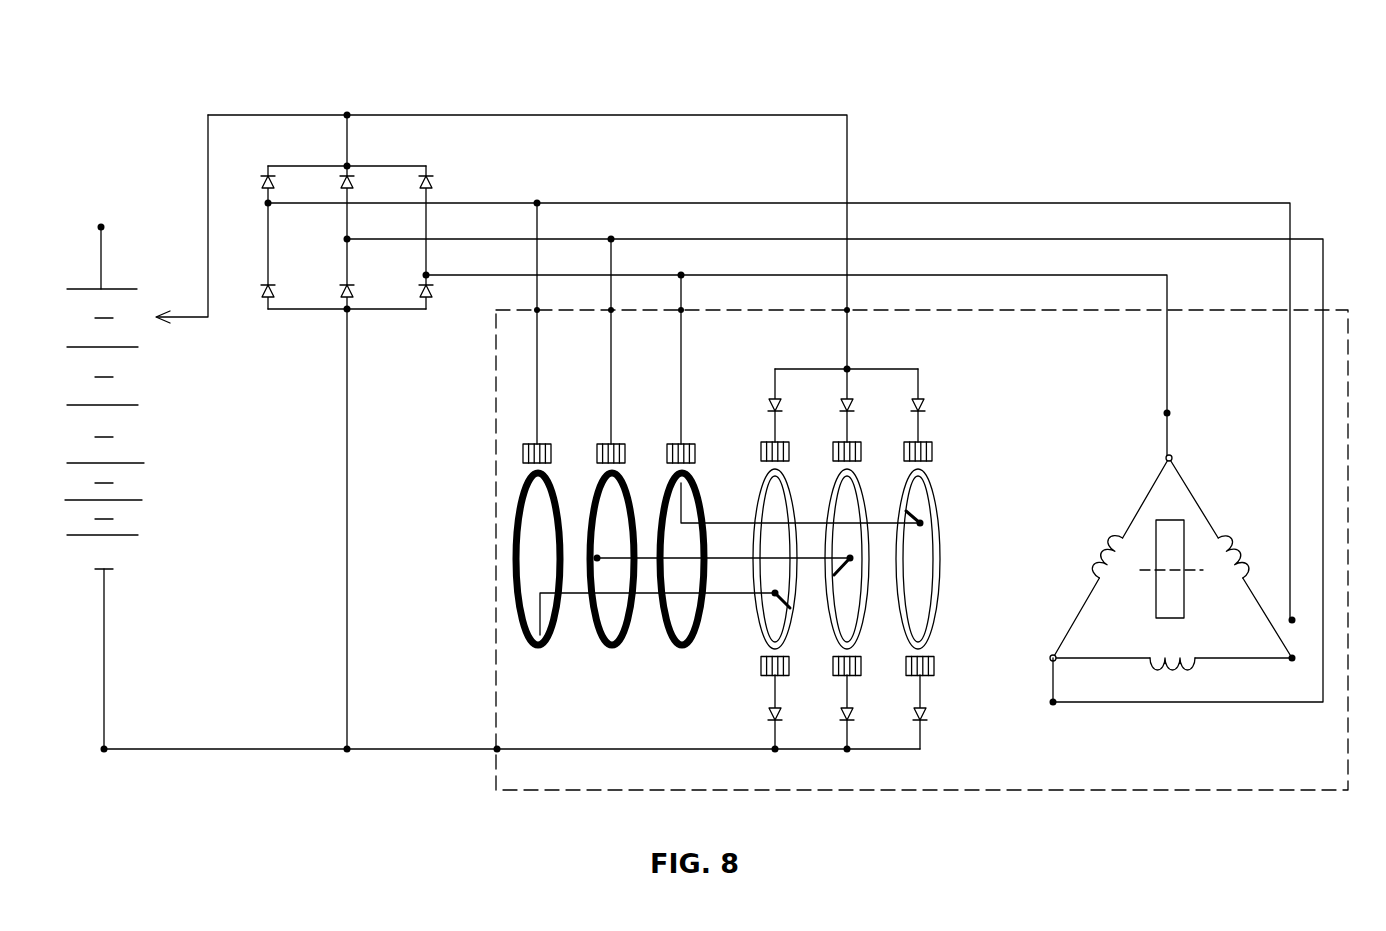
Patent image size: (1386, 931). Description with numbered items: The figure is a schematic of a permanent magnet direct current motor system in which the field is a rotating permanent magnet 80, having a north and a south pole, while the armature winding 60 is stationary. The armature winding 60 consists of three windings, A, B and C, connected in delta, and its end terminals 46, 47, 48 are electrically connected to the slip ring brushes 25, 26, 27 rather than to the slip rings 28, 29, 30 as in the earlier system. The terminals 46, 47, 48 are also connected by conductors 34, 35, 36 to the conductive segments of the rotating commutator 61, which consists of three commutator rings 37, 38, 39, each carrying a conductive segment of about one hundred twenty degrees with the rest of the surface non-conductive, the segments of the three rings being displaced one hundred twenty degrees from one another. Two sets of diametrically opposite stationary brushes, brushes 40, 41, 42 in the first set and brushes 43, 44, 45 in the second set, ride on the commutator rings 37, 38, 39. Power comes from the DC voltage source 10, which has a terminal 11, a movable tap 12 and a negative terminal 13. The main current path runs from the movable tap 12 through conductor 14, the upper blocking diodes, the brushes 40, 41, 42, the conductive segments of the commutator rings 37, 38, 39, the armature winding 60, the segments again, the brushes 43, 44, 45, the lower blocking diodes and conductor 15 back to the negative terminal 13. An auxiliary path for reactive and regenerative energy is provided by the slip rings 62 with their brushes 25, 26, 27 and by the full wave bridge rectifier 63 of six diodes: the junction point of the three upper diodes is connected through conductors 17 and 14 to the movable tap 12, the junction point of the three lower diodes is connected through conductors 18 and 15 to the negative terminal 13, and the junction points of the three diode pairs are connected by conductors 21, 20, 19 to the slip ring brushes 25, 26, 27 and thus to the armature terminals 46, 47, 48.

The battery 10 is at (72, 277).
The battery positive terminal 11 is at (116, 253).
The movable tap 12 is at (165, 334).
The negative terminal 13 is at (112, 745).
The conductor 14 is at (260, 120).
The conductor 15 is at (244, 752).
The conductor 17 is at (352, 145).
The conductor 18 is at (352, 547).
The first phase conductor 19 is at (272, 208).
The second phase conductor 20 is at (352, 244).
The third phase conductor 21 is at (430, 270).
The slip ring brush 25 is at (686, 440).
The slip ring brush 26 is at (616, 440).
The slip ring brush 27 is at (542, 440).
The slip ring 28 is at (658, 500).
The slip ring 29 is at (586, 500).
The slip ring 30 is at (516, 500).
The conductor 34 is at (916, 528).
The conductor 35 is at (840, 568).
The conductor 36 is at (786, 594).
The commutator ring 37 is at (950, 484).
The commutator ring 38 is at (880, 484).
The commutator ring 39 is at (808, 484).
The brush 40 is at (925, 438).
The brush 41 is at (854, 438).
The brush 42 is at (782, 438).
The brush 43 is at (927, 680).
The brush 44 is at (854, 680).
The brush 45 is at (782, 680).
The armature winding terminal 46 is at (1175, 418).
The armature winding terminal 47 is at (1049, 708).
The armature winding terminal 48 is at (1294, 618).
The armature winding 60 is at (1140, 486).
The commutator 61 is at (983, 452).
The slip rings 62 is at (700, 412).
The full wave bridge rectifier 63 is at (436, 150).
The rotating permanent magnet 80 is at (1190, 605).